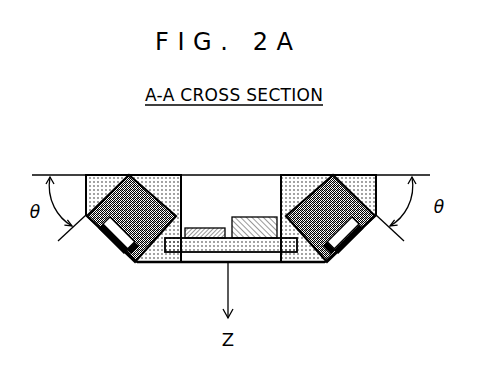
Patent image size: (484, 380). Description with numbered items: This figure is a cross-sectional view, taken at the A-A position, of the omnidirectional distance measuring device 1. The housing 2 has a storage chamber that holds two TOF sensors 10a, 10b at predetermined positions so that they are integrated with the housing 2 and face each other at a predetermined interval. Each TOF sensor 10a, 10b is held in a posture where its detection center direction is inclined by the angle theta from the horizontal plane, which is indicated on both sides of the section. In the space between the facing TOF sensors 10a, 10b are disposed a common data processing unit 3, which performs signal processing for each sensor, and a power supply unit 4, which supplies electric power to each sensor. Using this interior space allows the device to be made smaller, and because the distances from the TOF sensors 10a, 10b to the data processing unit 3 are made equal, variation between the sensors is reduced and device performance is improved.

The omnidirectional distance measuring device 1 is at (89, 134).
The housing 2 is at (309, 183).
The data processing unit 3 is at (204, 227).
The power supply unit 4 is at (255, 216).
The TOF sensor 10a is at (110, 241).
The TOF sensor 10b is at (352, 241).